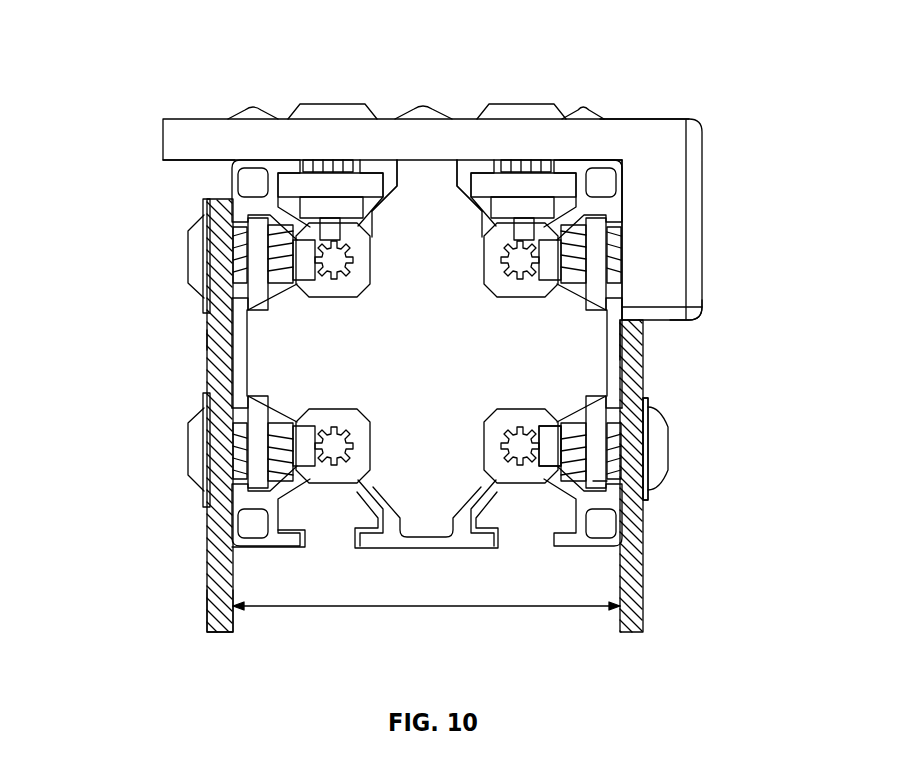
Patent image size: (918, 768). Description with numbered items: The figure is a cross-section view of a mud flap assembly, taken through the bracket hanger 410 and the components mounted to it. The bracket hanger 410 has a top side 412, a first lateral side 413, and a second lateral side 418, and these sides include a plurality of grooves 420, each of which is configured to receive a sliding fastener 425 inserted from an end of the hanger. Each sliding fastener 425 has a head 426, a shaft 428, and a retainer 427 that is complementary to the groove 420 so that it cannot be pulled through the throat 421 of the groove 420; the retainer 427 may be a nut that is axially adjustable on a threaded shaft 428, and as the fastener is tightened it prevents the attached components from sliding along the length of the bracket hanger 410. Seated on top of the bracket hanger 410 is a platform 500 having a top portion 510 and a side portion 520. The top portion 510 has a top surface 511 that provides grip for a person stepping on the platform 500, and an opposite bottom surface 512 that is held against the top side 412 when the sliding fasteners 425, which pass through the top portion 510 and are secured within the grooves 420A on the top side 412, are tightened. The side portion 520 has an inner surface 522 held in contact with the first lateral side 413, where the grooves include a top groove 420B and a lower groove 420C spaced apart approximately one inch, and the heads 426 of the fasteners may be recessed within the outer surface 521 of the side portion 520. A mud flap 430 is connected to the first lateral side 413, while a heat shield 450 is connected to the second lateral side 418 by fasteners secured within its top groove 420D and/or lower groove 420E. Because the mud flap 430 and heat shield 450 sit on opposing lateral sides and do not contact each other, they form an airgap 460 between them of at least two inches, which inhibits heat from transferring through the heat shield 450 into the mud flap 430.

The platform 500 is at (424, 346).
The top portion 510 is at (163, 129).
The top surface 511 is at (647, 119).
The bottom surface 512 is at (170, 162).
The side portion 520 is at (648, 198).
The outer surface 521 is at (703, 282).
The inner surface 522 is at (622, 206).
The bracket hanger 410 is at (225, 517).
The top side 412 is at (584, 160).
The first lateral side 413 is at (630, 347).
The second lateral side 418 is at (207, 340).
The groove 420 is at (427, 374).
The groove on top side 420A is at (372, 202).
The top groove 420B is at (567, 302).
The lower groove 420C is at (568, 394).
The top groove 420D is at (292, 305).
The lower groove 420E is at (290, 384).
The throat 421 is at (306, 546).
The sliding fastener 425 is at (334, 104).
The head 426 is at (660, 460).
The retainer 427 is at (603, 480).
The shaft 428 is at (533, 445).
The mud flap 430 is at (638, 580).
The heat shield 450 is at (222, 602).
The airgap 460 is at (433, 611).